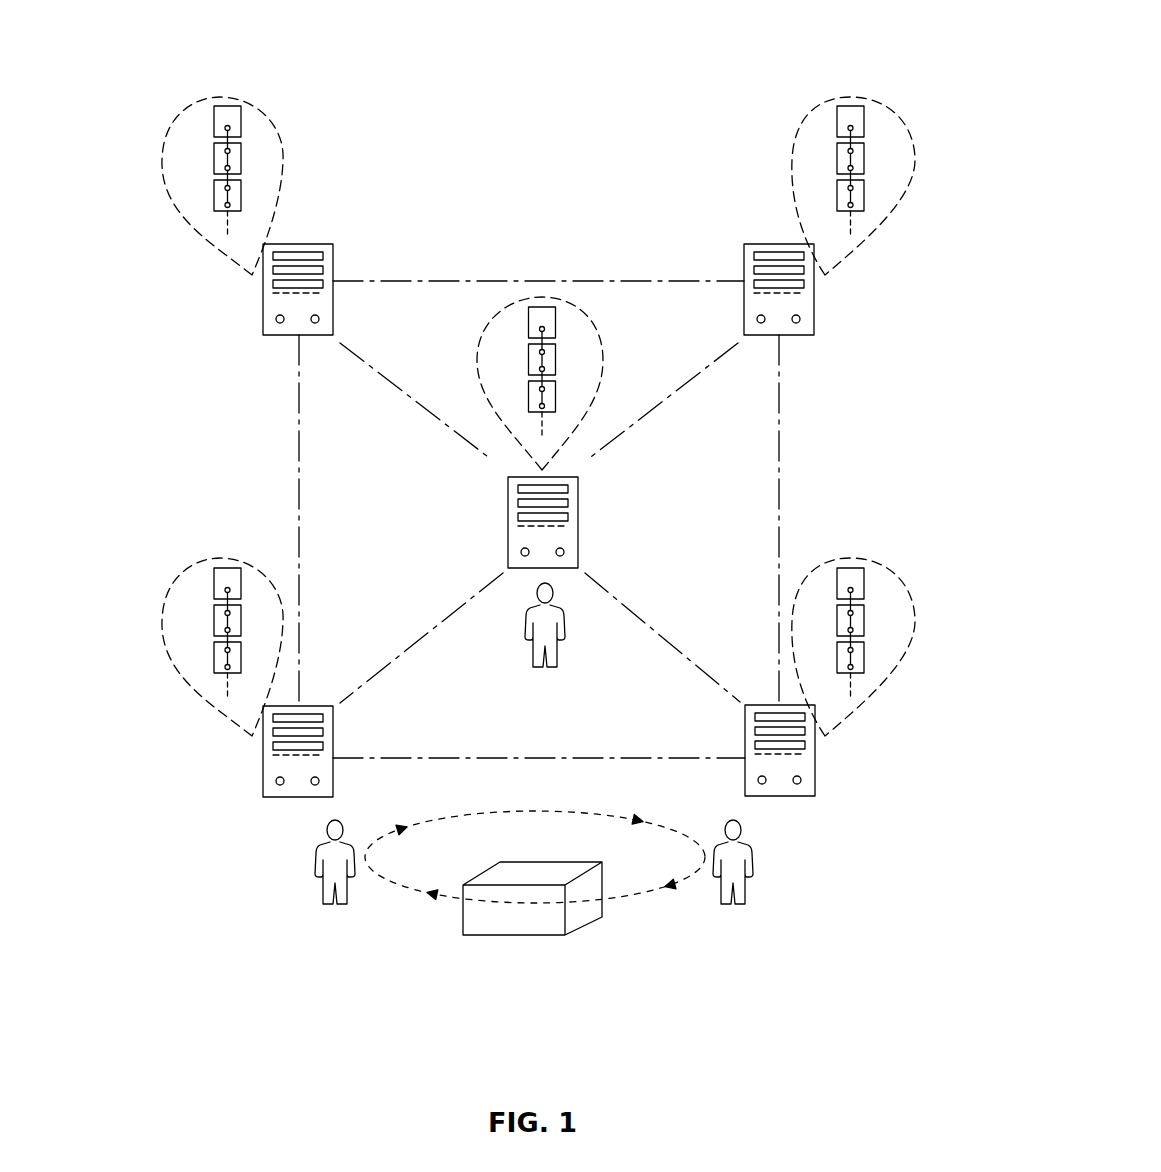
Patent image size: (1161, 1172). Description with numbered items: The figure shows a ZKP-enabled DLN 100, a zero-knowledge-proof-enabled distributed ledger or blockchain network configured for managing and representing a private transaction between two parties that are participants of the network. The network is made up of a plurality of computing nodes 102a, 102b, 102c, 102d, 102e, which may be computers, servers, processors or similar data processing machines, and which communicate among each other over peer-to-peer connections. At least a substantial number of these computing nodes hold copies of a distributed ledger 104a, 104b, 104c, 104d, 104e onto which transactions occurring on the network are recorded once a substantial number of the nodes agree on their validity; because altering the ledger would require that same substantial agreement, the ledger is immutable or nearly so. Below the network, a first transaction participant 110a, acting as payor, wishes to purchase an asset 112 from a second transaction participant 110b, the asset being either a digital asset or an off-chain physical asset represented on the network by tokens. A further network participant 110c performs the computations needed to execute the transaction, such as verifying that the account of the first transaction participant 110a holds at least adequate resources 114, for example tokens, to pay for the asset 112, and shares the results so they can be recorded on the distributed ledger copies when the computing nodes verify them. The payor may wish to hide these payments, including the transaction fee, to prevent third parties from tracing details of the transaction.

The ZKP-enabled DLN 100 is at (138, 349).
The computing node 102a is at (333, 724).
The computing node 102b is at (815, 765).
The computing node 102c is at (579, 515).
The computing node 102d is at (298, 244).
The computing node 102e is at (770, 244).
The distributed ledger 104a is at (200, 565).
The distributed ledger 104b is at (905, 585).
The distributed ledger 104c is at (603, 356).
The distributed ledger 104d is at (283, 143).
The distributed ledger 104e is at (905, 122).
The first transaction participant 110a is at (315, 885).
The second transaction participant 110b is at (752, 868).
The network participant 110c is at (558, 655).
The asset 112 is at (565, 940).
The resources 114 is at (548, 800).